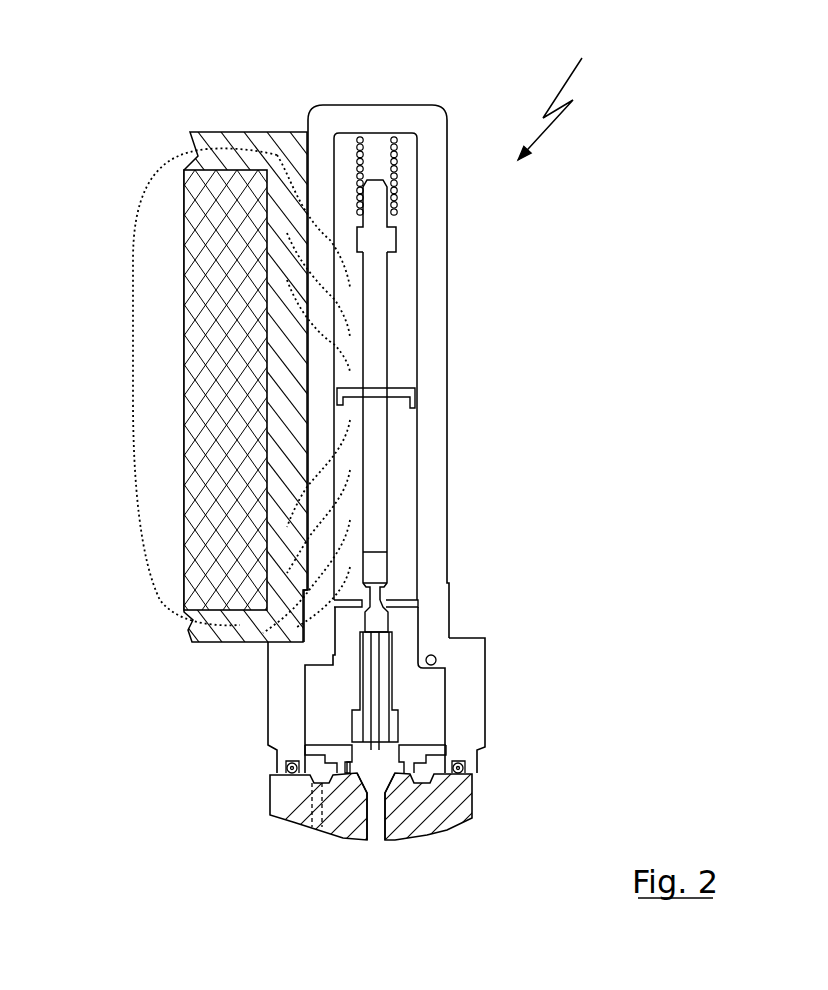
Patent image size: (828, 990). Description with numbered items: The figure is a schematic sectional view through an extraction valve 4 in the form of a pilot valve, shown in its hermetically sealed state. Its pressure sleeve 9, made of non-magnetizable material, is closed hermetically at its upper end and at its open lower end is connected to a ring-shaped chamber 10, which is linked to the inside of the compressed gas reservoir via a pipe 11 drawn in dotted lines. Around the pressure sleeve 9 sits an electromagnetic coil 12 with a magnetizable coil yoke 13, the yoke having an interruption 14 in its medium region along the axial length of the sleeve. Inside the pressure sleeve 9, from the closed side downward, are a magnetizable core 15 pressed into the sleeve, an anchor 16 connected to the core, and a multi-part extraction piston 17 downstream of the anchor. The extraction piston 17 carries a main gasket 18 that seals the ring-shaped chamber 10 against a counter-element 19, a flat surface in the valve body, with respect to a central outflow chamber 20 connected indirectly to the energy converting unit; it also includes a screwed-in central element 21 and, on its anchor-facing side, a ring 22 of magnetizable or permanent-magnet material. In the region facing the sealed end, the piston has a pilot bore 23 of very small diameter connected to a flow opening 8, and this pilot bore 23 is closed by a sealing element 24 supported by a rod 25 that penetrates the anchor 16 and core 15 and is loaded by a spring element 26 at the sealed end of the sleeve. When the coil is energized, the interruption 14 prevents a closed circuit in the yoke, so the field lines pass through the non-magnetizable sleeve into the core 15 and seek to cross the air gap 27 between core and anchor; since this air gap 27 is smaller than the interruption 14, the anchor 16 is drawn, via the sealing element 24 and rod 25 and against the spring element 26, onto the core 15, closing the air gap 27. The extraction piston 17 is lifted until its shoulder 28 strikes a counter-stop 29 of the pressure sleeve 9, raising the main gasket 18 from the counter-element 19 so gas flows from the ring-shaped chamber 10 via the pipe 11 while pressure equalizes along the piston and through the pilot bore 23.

The extraction valve 4 is at (561, 94).
The flow opening 8 is at (373, 698).
The pressure sleeve 9 is at (330, 118).
The ring-shaped chamber 10 is at (305, 772).
The pipe 11 is at (313, 810).
The electromagnetic coil 12 is at (213, 232).
The coil yoke 13 is at (207, 162).
The interruption 14 is at (290, 391).
The core 15 is at (407, 275).
The anchor 16 is at (407, 473).
The extraction piston 17 is at (428, 688).
The main gasket 18 is at (338, 755).
The counter-element 19 is at (345, 772).
The central outflow chamber 20 is at (375, 818).
The central element 21 is at (440, 808).
The ring 22 is at (348, 617).
The pilot bore 23 is at (378, 590).
The sealing element 24 is at (372, 568).
The rod 25 is at (380, 308).
The spring element 26 is at (395, 155).
The air gap 27 is at (398, 390).
The shoulder 28 is at (437, 662).
The counter-stop 29 is at (430, 663).